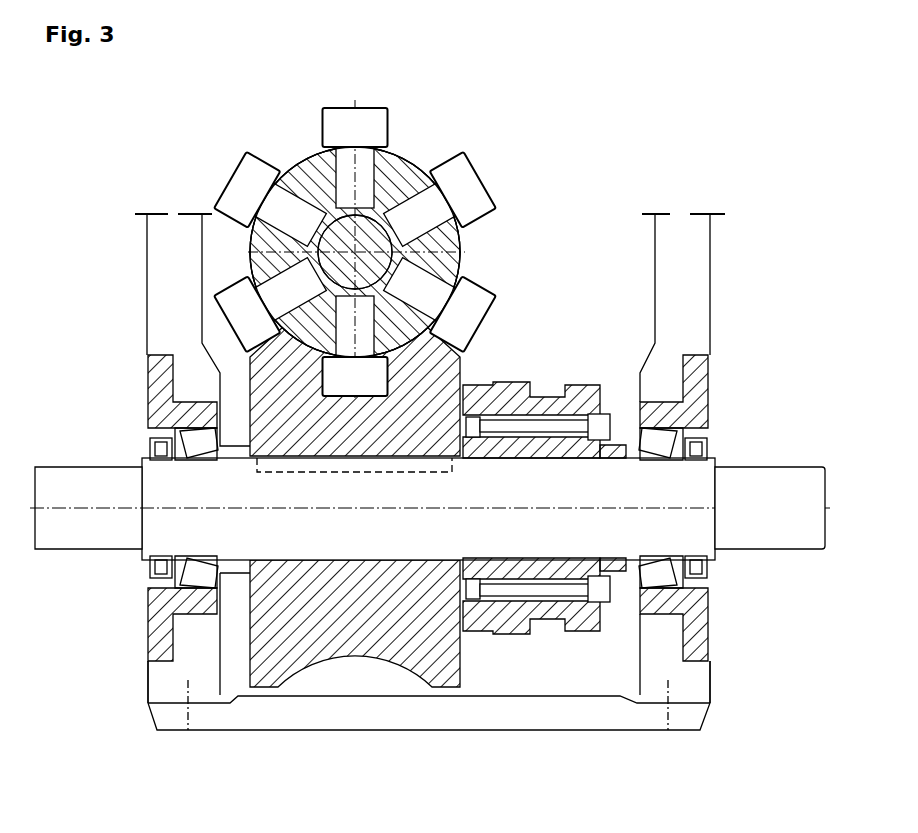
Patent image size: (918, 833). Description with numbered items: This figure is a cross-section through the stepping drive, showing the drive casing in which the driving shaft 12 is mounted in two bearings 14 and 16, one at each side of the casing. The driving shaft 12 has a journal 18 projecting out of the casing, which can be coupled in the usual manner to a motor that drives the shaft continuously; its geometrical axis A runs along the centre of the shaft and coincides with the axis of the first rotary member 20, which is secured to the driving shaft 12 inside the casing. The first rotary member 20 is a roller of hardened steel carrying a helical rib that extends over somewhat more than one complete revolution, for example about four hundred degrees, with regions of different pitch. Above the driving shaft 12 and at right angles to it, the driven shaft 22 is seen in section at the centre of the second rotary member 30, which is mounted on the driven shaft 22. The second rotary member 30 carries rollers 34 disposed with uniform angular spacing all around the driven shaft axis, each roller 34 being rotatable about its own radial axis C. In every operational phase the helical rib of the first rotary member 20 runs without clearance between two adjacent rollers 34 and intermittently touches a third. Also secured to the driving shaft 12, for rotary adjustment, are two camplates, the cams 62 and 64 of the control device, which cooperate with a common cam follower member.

The driving shaft 12 is at (615, 475).
The bearing 14 is at (662, 447).
The bearing 16 is at (177, 447).
The journal 18 is at (775, 477).
The first rotary member 20 is at (452, 366).
The driven shaft 22 is at (378, 260).
The second rotary member 30 is at (495, 189).
The rollers 34 is at (243, 180).
The cam 62 is at (512, 633).
The cam 64 is at (582, 622).
The radial axis C is at (358, 173).
The geometrical axis A is at (742, 509).